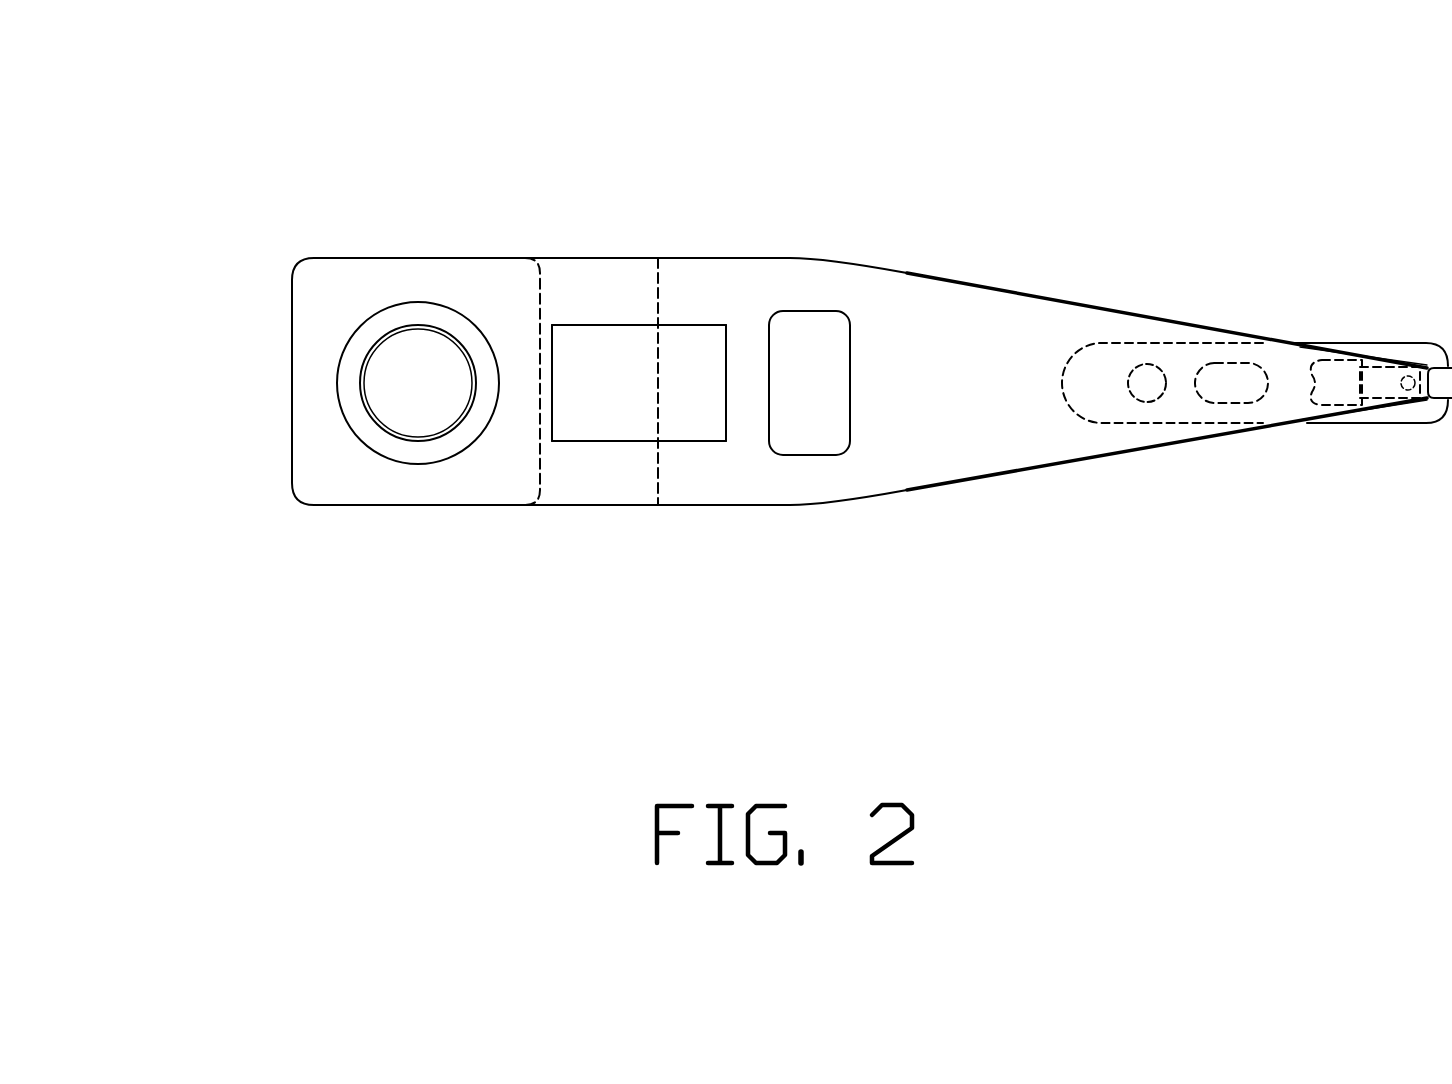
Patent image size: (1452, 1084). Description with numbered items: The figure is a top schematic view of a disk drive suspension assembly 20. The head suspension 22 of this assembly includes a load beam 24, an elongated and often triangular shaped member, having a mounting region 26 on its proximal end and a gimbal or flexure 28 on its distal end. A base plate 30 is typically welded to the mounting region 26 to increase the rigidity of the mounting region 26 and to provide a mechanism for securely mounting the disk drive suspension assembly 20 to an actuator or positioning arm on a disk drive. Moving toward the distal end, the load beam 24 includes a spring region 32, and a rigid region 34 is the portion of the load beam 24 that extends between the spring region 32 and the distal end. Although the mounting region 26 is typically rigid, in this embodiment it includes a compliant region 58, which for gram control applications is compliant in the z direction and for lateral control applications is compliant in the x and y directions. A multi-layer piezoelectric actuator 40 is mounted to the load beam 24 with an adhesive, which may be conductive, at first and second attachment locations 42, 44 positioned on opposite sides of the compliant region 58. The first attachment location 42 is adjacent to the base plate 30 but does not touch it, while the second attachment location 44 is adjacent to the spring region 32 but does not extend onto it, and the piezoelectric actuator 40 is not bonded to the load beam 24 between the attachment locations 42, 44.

The disk drive suspension assembly 20 is at (245, 493).
The head suspension 22 is at (963, 482).
The load beam 24 is at (1055, 297).
The mounting region 26 is at (325, 293).
The gimbal or flexure 28 is at (1363, 343).
The base plate 30 is at (405, 465).
The spring region 32 is at (836, 262).
The rigid region 34 is at (970, 395).
The multi-layer piezoelectric actuator 40 is at (622, 445).
The first attachment location 42 is at (567, 370).
The second attachment location 44 is at (710, 370).
The compliant region 58 is at (655, 293).